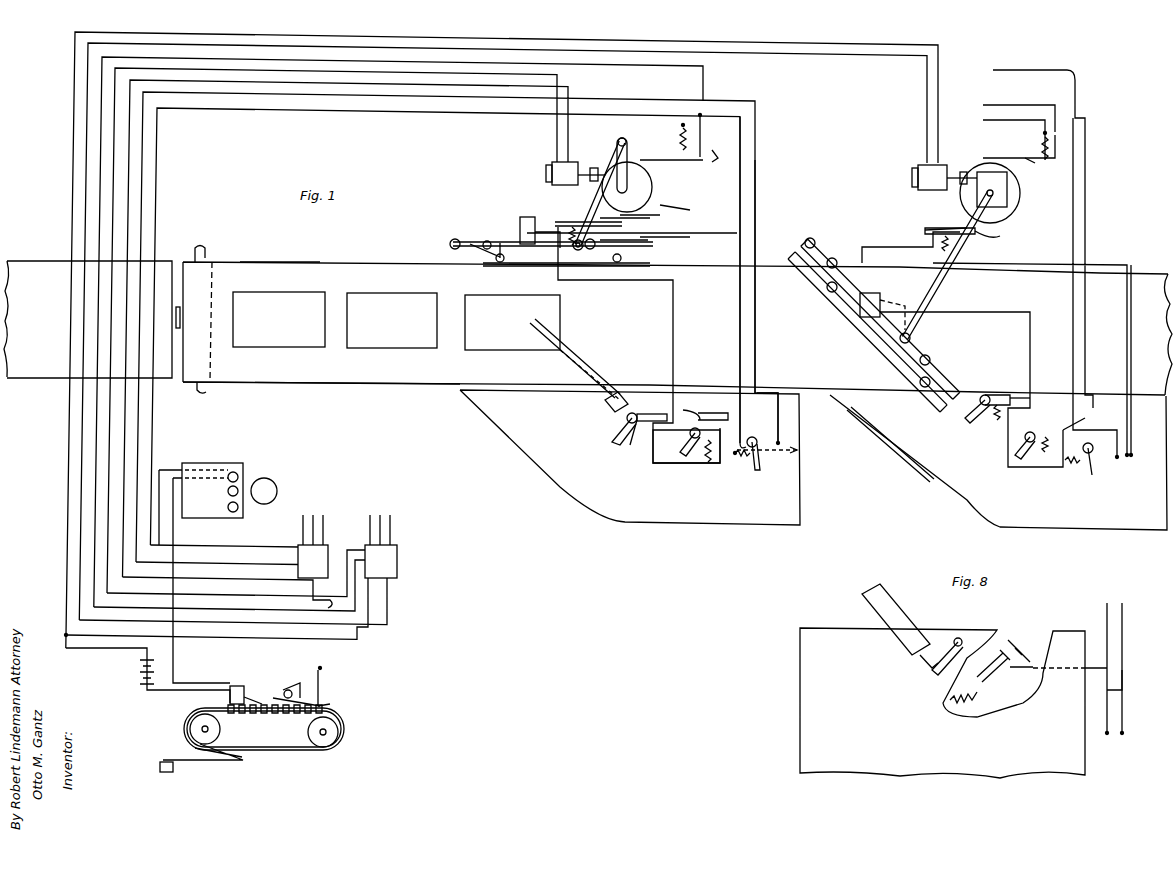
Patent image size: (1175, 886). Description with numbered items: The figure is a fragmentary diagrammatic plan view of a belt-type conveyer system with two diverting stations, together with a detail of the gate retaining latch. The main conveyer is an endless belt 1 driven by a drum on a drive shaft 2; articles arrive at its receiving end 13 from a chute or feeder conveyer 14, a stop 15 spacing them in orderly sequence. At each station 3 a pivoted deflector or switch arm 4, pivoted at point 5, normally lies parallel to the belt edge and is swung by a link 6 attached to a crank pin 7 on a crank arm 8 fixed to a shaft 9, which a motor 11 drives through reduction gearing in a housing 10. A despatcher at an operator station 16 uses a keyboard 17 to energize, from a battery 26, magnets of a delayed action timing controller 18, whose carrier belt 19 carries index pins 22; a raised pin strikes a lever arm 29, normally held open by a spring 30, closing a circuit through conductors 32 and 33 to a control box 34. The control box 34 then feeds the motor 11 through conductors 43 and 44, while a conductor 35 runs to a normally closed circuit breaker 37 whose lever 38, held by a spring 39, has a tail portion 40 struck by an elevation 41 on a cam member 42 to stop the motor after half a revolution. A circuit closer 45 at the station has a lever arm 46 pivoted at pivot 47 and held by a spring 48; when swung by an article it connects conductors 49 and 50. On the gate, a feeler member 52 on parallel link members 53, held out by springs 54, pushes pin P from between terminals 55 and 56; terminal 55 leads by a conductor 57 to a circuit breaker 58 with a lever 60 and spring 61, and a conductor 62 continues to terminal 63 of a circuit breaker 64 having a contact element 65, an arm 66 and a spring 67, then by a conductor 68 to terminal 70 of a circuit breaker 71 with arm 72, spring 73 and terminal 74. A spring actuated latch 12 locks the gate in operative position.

In FIG. 1, the endless belt 1 is at (363, 372).
In FIG. 1, the drive shaft 2 is at (210, 392).
In FIG. 1, the station 3 is at (515, 450).
In FIG. 1, the deflector or switch arm 4 is at (496, 238).
In FIG. 1, the pivot point 5 is at (448, 243).
In FIG. 1, the link 6 is at (599, 195).
In FIG. 1, the crank pin 7 is at (632, 132).
In FIG. 1, the crank arm 8 is at (640, 182).
In FIG. 1, the shaft 9 is at (646, 217).
In FIG. 1, the housing 10 is at (640, 188).
In FIG. 1, the motor 11 is at (546, 170).
In FIG. 1, the spring actuated latch 12 is at (618, 420).
In FIG. 8, the spring actuated latch 12 is at (930, 672).
In FIG. 1, the receiving end 13 is at (250, 238).
In FIG. 1, the chute or feeder conveyer 14 is at (165, 265).
In FIG. 1, the stop 15 is at (180, 315).
In FIG. 1, the operator or despatcher station 16 is at (270, 491).
In FIG. 1, the keyboard 17 is at (212, 470).
In FIG. 1, the delayed action timing controller 18 is at (380, 728).
In FIG. 1, the carrier belt 19 is at (292, 745).
In FIG. 1, the index pins 22 is at (258, 690).
In FIG. 1, the battery 26 is at (135, 688).
In FIG. 1, the lever arm 29 is at (297, 685).
In FIG. 1, the spring 30 is at (290, 688).
In FIG. 1, the conductor 32 is at (640, 95).
In FIG. 1, the conductor 33 is at (330, 61).
In FIG. 1, the control box 34 is at (318, 550).
In FIG. 1, the conductor 35 is at (370, 112).
In FIG. 1, the circuit breaker 37 is at (720, 168).
In FIG. 1, the lever 38 is at (690, 149).
In FIG. 1, the spring 39 is at (672, 135).
In FIG. 1, the tail portion 40 is at (671, 150).
In FIG. 1, the elevation 41 is at (628, 222).
In FIG. 1, the cam member 42 is at (691, 211).
In FIG. 1, the conductor 43 is at (415, 73).
In FIG. 1, the conductor 44 is at (555, 143).
In FIG. 1, the circuit closer 45 is at (805, 450).
In FIG. 1, the lever arm 46 is at (758, 460).
In FIG. 1, the pivot 47 is at (713, 426).
In FIG. 1, the spring 48 is at (745, 458).
In FIG. 1, the conductor 49 is at (748, 335).
In FIG. 8, the conductor 49 is at (1130, 663).
In FIG. 1, the conductor 50 is at (770, 395).
In FIG. 8, the conductor 50 is at (1125, 625).
In FIG. 1, the feeler member 52 is at (520, 268).
In FIG. 1, the parallel link members 53 is at (495, 258).
In FIG. 1, the springs 54 is at (485, 240).
In FIG. 1, the terminal 55 is at (540, 230).
In FIG. 1, the terminal 56 is at (570, 227).
In FIG. 1, the conductor 57 is at (522, 217).
In FIG. 1, the circuit breaker 58 is at (898, 232).
In FIG. 1, the lever 60 is at (588, 215).
In FIG. 1, the spring 61 is at (963, 239).
In FIG. 1, the conductor 62 is at (675, 315).
In FIG. 1, the terminal 63 is at (1030, 410).
In FIG. 1, the circuit breaker 64 is at (655, 410).
In FIG. 1, the contact element 65 is at (1005, 392).
In FIG. 1, the arm 66 is at (628, 450).
In FIG. 1, the spring 67 is at (990, 418).
In FIG. 1, the conductor 68 is at (685, 462).
In FIG. 1, the terminal 70 is at (1073, 461).
In FIG. 1, the circuit breaker 71 is at (1092, 500).
In FIG. 1, the arm 72 is at (700, 445).
In FIG. 1, the spring 73 is at (1042, 455).
In FIG. 1, the terminal 74 is at (1087, 418).